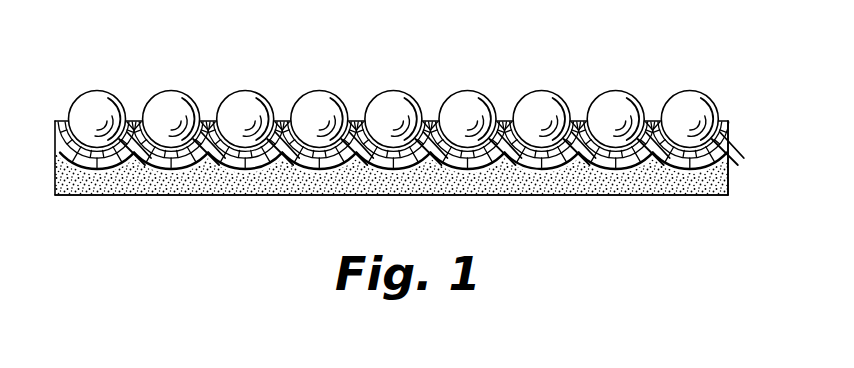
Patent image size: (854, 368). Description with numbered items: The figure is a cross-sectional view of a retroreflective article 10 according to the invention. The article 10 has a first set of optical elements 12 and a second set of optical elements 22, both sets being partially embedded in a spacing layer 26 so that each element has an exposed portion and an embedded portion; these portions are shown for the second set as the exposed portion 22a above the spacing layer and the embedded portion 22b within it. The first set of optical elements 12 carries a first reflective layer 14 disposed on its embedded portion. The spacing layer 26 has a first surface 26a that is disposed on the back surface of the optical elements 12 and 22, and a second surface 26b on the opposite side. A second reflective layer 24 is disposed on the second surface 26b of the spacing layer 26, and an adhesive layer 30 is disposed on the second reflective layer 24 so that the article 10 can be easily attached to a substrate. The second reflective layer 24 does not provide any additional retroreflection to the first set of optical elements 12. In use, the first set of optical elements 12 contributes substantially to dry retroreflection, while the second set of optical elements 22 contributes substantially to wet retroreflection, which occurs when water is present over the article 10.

The retroreflective article 10 is at (604, 55).
The first set of optical elements 12 is at (372, 100).
The first reflective layer 14 is at (65, 125).
The second set of optical elements 22 is at (225, 102).
The exposed portion 22a is at (498, 88).
The embedded portion 22b is at (498, 121).
The second reflective layer 24 is at (92, 172).
The spacing layer 26 is at (728, 143).
The first surface 26a is at (140, 122).
The second surface 26b is at (185, 160).
The adhesive layer 30 is at (352, 187).